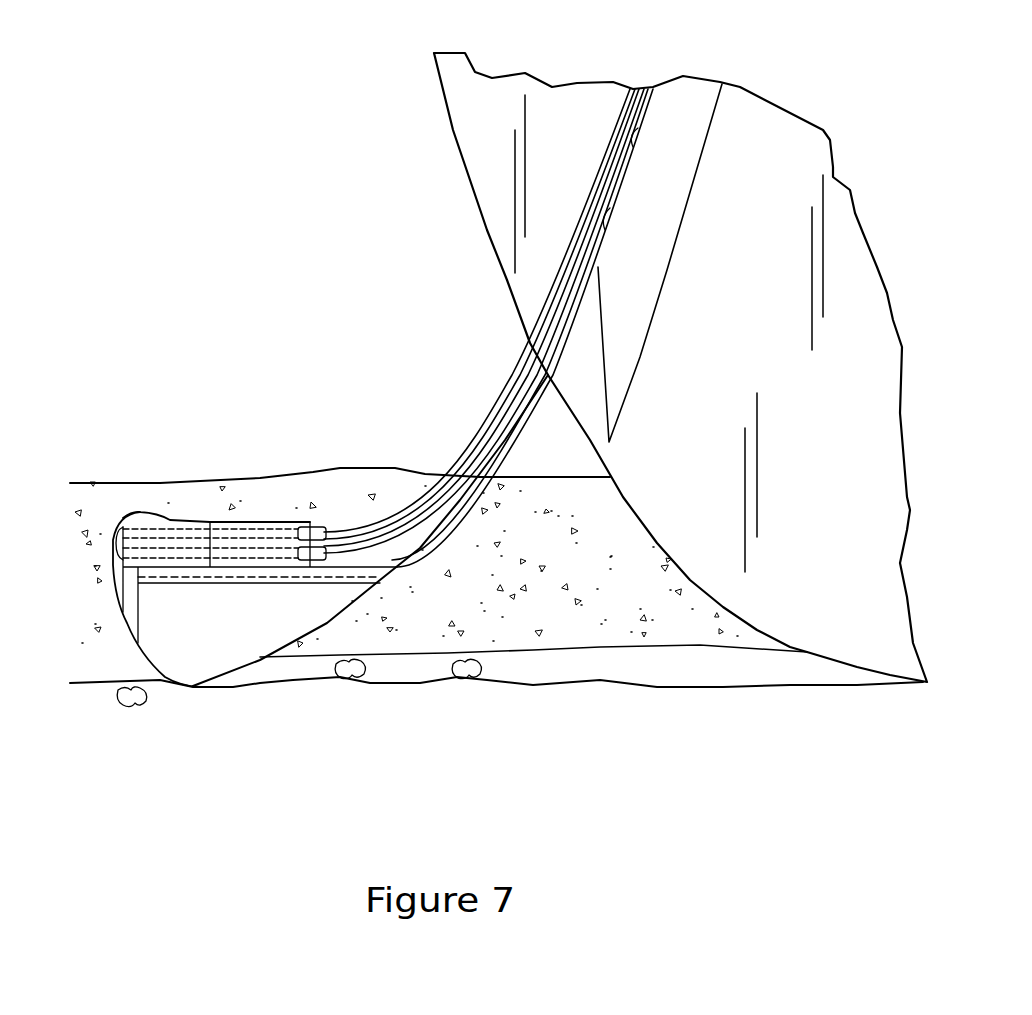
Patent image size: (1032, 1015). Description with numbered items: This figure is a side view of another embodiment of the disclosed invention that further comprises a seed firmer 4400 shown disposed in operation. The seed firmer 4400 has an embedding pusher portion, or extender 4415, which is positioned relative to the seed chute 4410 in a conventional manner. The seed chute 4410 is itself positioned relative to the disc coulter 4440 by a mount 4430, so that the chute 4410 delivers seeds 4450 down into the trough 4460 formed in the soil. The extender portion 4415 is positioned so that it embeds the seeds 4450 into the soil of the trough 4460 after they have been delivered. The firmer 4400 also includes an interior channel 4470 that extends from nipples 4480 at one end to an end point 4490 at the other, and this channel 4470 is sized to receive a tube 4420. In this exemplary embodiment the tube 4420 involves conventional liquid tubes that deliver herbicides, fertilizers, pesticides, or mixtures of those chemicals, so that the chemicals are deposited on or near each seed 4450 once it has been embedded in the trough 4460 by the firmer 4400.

The seed firmer 4400 is at (251, 710).
The seed chute 4410 is at (680, 200).
The extender 4415 is at (213, 655).
The tube 4420 is at (495, 426).
The mount 4430 is at (619, 172).
The disc coulter 4440 is at (838, 240).
The seeds 4450 is at (120, 692).
The trough 4460 is at (728, 666).
The interior channel 4470 is at (172, 521).
The nipples 4480 is at (308, 520).
The end point 4490 is at (106, 548).